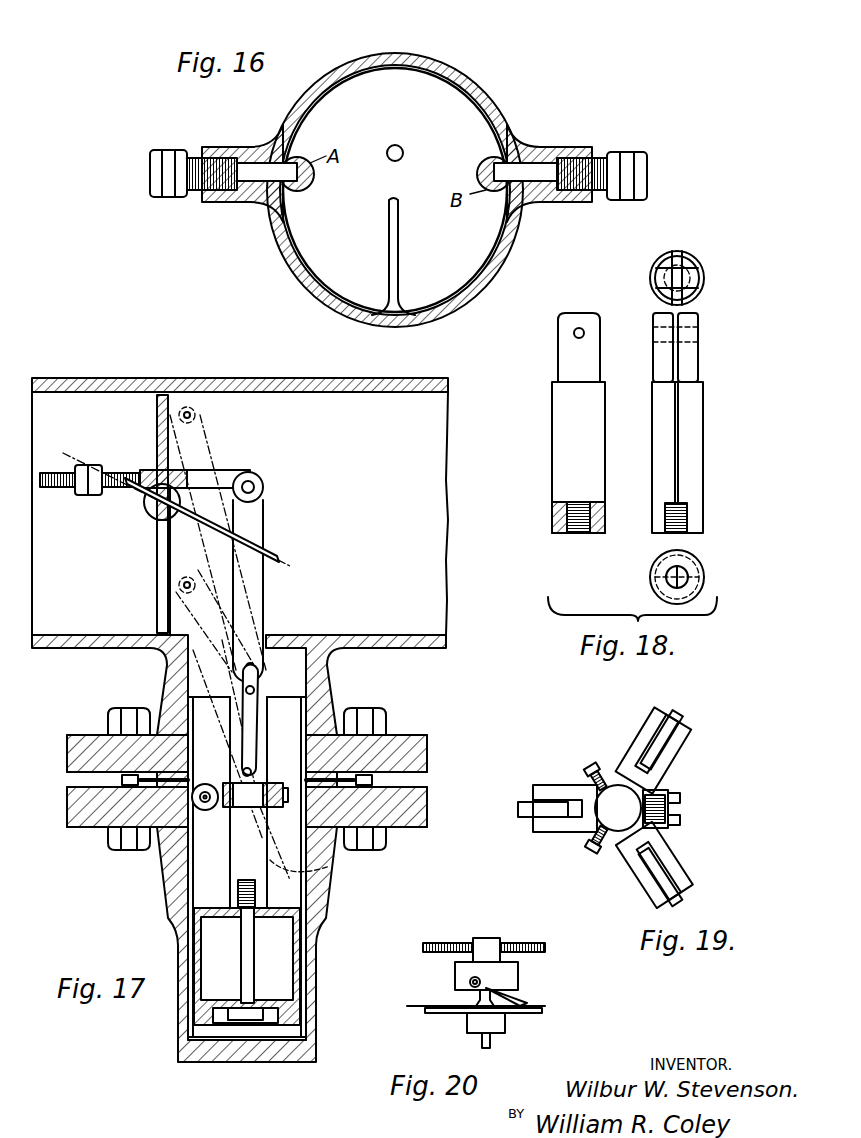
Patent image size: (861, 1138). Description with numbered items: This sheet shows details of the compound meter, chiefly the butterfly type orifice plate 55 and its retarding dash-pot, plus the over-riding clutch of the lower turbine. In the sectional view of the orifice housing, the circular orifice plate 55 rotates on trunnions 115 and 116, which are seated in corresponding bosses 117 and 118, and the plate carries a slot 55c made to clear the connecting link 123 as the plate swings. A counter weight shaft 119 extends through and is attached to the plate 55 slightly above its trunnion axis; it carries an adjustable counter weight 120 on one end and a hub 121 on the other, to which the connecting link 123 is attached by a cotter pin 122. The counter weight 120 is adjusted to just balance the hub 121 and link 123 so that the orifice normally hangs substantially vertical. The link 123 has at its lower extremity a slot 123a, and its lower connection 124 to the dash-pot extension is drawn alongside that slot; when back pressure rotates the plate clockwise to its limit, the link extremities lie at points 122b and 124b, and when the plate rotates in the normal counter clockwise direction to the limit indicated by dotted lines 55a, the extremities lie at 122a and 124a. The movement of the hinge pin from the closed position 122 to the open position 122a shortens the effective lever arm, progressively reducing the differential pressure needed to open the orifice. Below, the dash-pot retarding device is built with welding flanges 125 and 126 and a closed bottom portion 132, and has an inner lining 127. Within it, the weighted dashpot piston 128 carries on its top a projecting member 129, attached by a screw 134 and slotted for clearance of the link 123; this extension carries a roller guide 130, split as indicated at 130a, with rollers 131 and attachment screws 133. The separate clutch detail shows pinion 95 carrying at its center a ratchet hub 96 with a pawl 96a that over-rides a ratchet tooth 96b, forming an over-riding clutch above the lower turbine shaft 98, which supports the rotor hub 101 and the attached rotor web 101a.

In FIG. 16, the butterfly type orifice plate 55 is at (310, 258).
In FIG. 17, the butterfly type orifice plate 55 is at (157, 625).
In FIG. 17, the dotted lines 55a is at (272, 548).
In FIG. 16, the slot 55c is at (399, 267).
In FIG. 16, the trunnion 115 is at (288, 192).
In FIG. 16, the trunnion 116 is at (504, 196).
In FIG. 16, the boss 117 is at (250, 146).
In FIG. 16, the boss 118 is at (543, 146).
In FIG. 17, the counter weight shaft 119 is at (113, 493).
In FIG. 17, the adjustable counter weight 120 is at (82, 496).
In FIG. 17, the hub 121 is at (266, 475).
In FIG. 17, the cotter pin 122 is at (263, 492).
In FIG. 17, the open orifice position 122a is at (197, 408).
In FIG. 17, the link extremity position 122b is at (198, 565).
In FIG. 17, the connecting link 123 is at (257, 596).
In FIG. 17, the slot 123a is at (254, 667).
In FIG. 17, the link 124 is at (254, 773).
In FIG. 17, the link extremity position 124a is at (256, 693).
In FIG. 17, the link extremity position 124b is at (332, 866).
In FIG. 17, the welding flange 125 is at (403, 738).
In FIG. 17, the welding flange 126 is at (405, 829).
In FIG. 17, the inner lining 127 is at (297, 882).
In FIG. 17, the weighted dashpot piston 128 is at (299, 966).
In FIG. 17, the projecting member 129 is at (232, 862).
In FIG. 18, the projecting member 129 is at (700, 262).
In FIG. 17, the roller guide 130 is at (226, 783).
In FIG. 19, the roller guide 130 is at (572, 840).
In FIG. 19, the split 130a is at (670, 810).
In FIG. 17, the roller 131 is at (205, 810).
In FIG. 19, the roller 131 is at (522, 800).
In FIG. 17, the closed bottom portion 132 is at (316, 1022).
In FIG. 19, the attachment screw 133 is at (588, 765).
In FIG. 17, the screw 134 is at (242, 925).
In FIG. 20, the pinion 95 is at (536, 943).
In FIG. 20, the ratchet hub 96 is at (518, 968).
In FIG. 20, the pawl 96a is at (526, 1001).
In FIG. 20, the ratchet tooth 96b is at (545, 1006).
In FIG. 20, the lower turbine shaft 98 is at (492, 1044).
In FIG. 20, the rotor hub 101 is at (505, 1027).
In FIG. 20, the rotor web 101a is at (440, 1007).